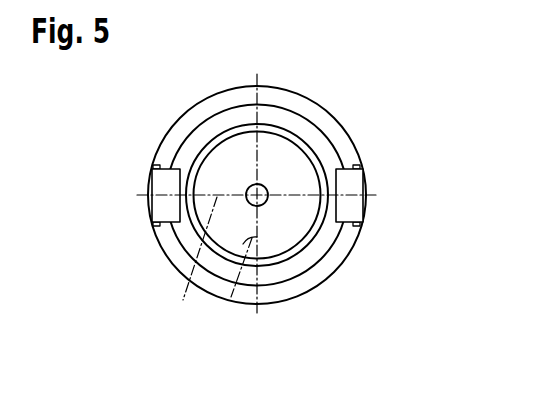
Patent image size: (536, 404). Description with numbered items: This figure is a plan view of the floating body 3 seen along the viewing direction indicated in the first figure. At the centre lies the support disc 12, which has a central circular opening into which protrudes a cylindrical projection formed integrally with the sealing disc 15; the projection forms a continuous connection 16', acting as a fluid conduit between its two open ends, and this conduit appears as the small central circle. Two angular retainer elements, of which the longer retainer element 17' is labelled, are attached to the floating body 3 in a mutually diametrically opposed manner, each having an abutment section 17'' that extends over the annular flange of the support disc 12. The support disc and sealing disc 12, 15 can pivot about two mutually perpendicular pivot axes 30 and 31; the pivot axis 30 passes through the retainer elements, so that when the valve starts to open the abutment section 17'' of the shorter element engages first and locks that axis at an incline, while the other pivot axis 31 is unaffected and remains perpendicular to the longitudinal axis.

The floating body 3 is at (308, 93).
The support disc 12 is at (317, 135).
The sealing disc 15 is at (292, 170).
The continuous connection 16' is at (320, 251).
The retainer element 17' is at (385, 195).
The abutment section 17'' is at (135, 191).
The pivot axis 30 is at (208, 230).
The pivot axis 31 is at (231, 297).